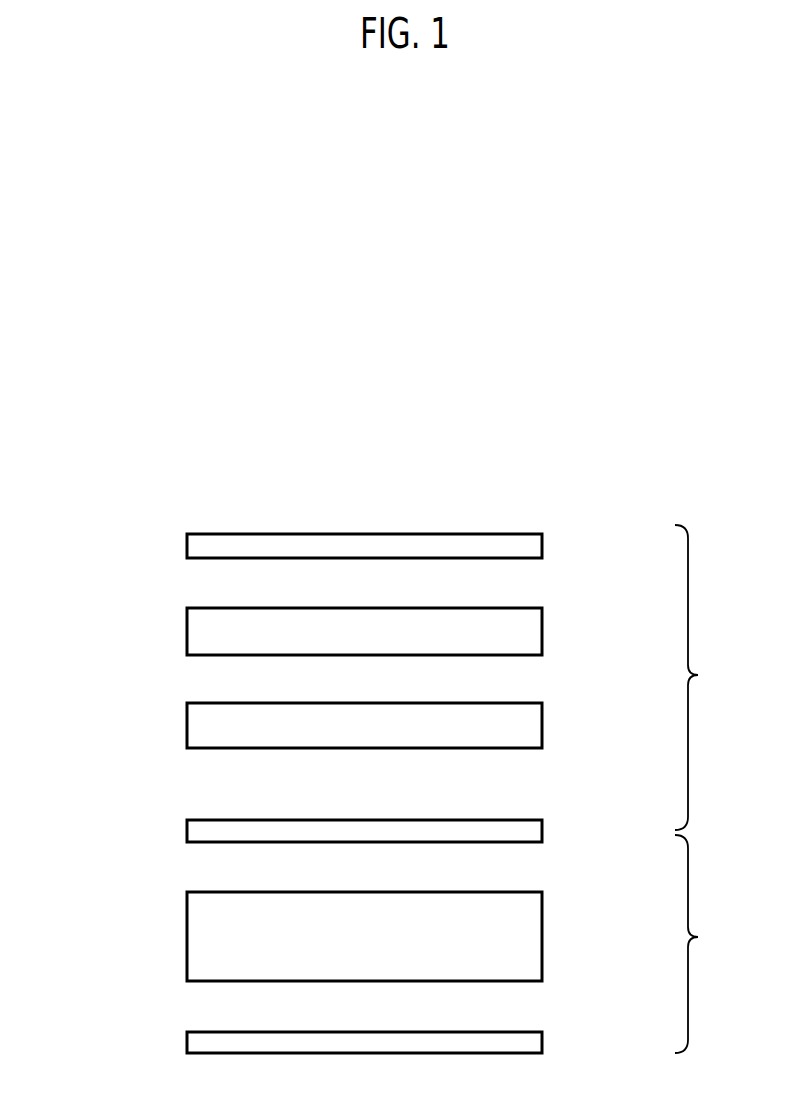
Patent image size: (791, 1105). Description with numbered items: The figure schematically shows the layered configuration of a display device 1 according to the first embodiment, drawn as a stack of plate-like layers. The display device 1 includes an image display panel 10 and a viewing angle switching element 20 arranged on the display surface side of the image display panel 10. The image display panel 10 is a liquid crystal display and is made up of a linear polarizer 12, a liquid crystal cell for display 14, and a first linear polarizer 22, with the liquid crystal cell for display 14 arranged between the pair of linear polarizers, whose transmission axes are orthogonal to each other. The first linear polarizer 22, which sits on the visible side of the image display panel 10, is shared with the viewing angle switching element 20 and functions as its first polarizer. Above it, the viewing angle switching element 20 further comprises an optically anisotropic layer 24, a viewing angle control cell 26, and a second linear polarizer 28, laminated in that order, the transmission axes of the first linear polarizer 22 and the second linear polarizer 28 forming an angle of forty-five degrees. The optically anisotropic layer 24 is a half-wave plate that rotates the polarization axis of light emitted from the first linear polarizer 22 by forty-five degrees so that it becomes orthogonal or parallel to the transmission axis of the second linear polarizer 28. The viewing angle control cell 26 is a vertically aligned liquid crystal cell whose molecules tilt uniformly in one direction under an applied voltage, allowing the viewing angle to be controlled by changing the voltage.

The display device 1 is at (140, 488).
The image display panel 10 is at (703, 944).
The linear polarizer 12 is at (544, 1042).
The liquid crystal cell for display 14 is at (544, 936).
The viewing angle switching element 20 is at (703, 677).
The first linear polarizer 22 is at (544, 830).
The optically anisotropic layer 24 is at (544, 722).
The viewing angle control cell 26 is at (544, 628).
The second linear polarizer 28 is at (544, 546).